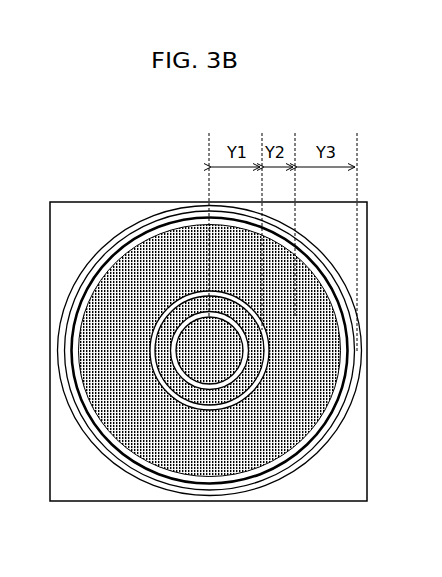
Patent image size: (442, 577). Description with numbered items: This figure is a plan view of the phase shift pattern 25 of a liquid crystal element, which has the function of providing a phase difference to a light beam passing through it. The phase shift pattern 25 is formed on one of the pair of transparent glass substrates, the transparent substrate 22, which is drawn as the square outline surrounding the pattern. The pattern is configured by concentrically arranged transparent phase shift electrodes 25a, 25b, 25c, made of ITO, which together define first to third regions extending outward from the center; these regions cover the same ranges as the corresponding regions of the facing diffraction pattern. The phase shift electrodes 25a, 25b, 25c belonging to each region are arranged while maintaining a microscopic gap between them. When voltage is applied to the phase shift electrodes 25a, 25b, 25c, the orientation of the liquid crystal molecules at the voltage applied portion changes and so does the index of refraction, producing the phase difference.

The transparent substrate 22 is at (111, 193).
The phase shift pattern 25 is at (208, 392).
The phase shift electrode 25a is at (228, 374).
The phase shift electrode 25b is at (185, 400).
The phase shift electrode 25c is at (122, 447).